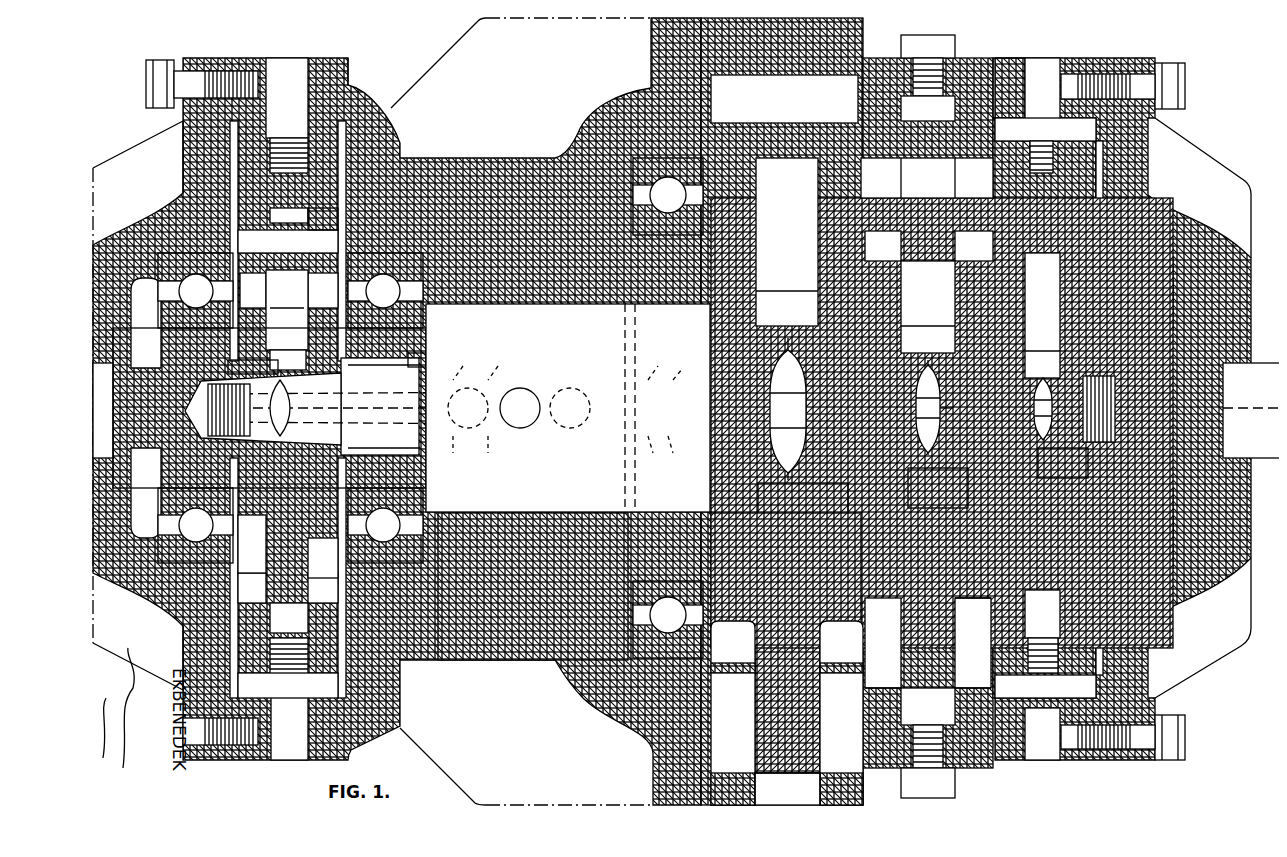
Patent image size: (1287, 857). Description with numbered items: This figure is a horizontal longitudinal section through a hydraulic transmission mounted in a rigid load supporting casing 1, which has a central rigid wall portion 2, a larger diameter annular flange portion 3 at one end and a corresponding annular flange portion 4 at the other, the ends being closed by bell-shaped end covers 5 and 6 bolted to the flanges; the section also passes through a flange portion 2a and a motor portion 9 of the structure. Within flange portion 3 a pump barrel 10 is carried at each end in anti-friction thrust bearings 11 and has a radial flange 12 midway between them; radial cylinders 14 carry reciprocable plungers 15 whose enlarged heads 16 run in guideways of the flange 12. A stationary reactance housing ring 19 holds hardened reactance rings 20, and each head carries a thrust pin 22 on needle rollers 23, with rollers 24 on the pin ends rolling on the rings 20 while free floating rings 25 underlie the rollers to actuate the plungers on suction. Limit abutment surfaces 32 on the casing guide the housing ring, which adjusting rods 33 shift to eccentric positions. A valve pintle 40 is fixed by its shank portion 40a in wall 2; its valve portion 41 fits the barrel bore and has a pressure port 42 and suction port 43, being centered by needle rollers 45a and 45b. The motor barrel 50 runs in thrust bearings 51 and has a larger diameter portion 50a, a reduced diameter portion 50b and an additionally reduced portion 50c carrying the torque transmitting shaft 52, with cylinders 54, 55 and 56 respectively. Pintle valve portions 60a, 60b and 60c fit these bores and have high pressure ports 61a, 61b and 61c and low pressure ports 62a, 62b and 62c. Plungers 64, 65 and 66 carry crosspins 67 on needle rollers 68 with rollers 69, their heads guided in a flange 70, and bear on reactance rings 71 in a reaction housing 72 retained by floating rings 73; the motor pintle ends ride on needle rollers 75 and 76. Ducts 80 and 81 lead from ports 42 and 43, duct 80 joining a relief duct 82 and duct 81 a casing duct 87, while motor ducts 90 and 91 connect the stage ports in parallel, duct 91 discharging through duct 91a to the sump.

The load supporting casing 1 is at (430, 150).
The central rigid wall portion 2 is at (295, 12).
The flange portion 2a is at (1025, 785).
The annular flange portion 3 is at (340, 60).
The annular flange portion 4 is at (640, 40).
The end cover 5 is at (190, 52).
The end cover 6 is at (1125, 55).
The rotor body portion 9 is at (790, 525).
The pump barrel 10 is at (269, 408).
The anti-friction thrust bearings 11 is at (290, 408).
The radial flange 12 is at (323, 558).
The radial cylinders 14 is at (288, 360).
The plunger 15 is at (288, 321).
The enlarged heads 16 is at (287, 310).
The annular reactance housing ring 19 is at (360, 95).
The reactance rings 20 is at (222, 175).
The thrust pin 22 is at (317, 230).
The needle rollers 23 is at (289, 230).
The rollers 24 is at (222, 205).
The free floating rings 25 is at (288, 423).
The limit abutment surfaces 32 is at (222, 130).
The adjusting rods 33 is at (287, 409).
The valve pintle 40 is at (640, 410).
The shank portion 40a is at (512, 315).
The valve portion 41 is at (380, 406).
The pressure port 42 is at (285, 400).
The suction port 43 is at (241, 410).
The capillary cageless needle rollers 45a is at (248, 362).
The capillary cageless needle rollers 45b is at (418, 352).
The motor barrel 50 is at (1165, 330).
The larger diameter portion 50a is at (803, 503).
The reduced diameter portion 50b is at (938, 488).
The additionally reduced diameter portion 50c is at (1063, 463).
The anti-friction thrust bearings 51 is at (903, 408).
The torque transmitting shaft 52 is at (1251, 410).
The radial cylinders 54 is at (787, 301).
The radial cylinders 55 is at (928, 337).
The radial cylinders 56 is at (1042, 362).
The valve portion 60a is at (808, 409).
The valve portion 60b is at (914, 407).
The valve portion 60c is at (962, 385).
The high pressure port 61a is at (762, 360).
The high pressure port 61b is at (904, 406).
The high pressure port 61c is at (1027, 409).
The low pressure port 62a is at (798, 380).
The low pressure port 62b is at (954, 443).
The low pressure port 62c is at (1059, 418).
The plungers 64 is at (787, 440).
The plungers 65 is at (928, 307).
The plungers 66 is at (1042, 407).
The crosspins 67 is at (943, 178).
The needle rollers 68 is at (912, 178).
The rollers 69 is at (927, 178).
The flange 70 is at (973, 621).
The reactance rings 71 is at (928, 672).
The reaction housing 72 is at (885, 50).
The floating rings 73 is at (929, 459).
The capillary cageless needle rollers 75 is at (647, 408).
The capillary cageless needle rollers 76 is at (1100, 368).
The ducts 80 is at (461, 409).
The ducts 81 is at (501, 409).
The relief duct 82 is at (520, 408).
The duct 87 is at (468, 408).
The ducts 90 is at (686, 410).
The ducts 91 is at (664, 412).
The duct 91a is at (562, 420).